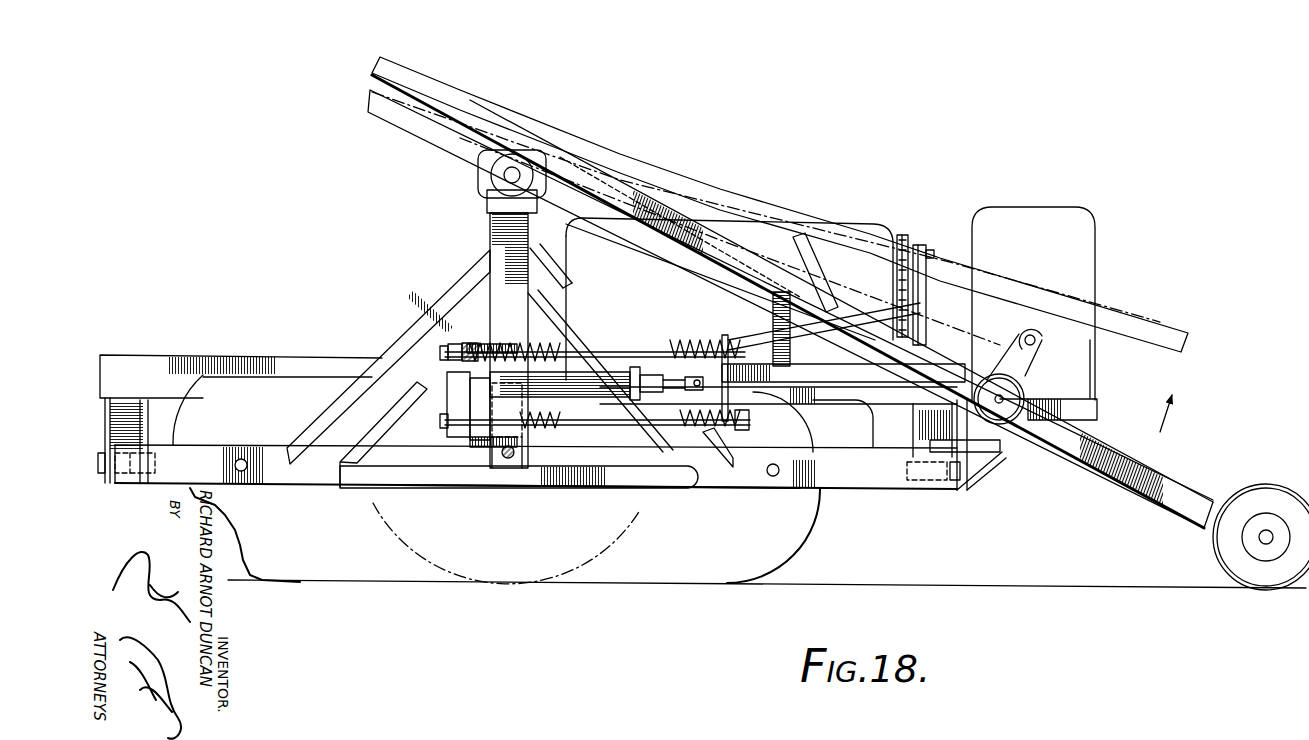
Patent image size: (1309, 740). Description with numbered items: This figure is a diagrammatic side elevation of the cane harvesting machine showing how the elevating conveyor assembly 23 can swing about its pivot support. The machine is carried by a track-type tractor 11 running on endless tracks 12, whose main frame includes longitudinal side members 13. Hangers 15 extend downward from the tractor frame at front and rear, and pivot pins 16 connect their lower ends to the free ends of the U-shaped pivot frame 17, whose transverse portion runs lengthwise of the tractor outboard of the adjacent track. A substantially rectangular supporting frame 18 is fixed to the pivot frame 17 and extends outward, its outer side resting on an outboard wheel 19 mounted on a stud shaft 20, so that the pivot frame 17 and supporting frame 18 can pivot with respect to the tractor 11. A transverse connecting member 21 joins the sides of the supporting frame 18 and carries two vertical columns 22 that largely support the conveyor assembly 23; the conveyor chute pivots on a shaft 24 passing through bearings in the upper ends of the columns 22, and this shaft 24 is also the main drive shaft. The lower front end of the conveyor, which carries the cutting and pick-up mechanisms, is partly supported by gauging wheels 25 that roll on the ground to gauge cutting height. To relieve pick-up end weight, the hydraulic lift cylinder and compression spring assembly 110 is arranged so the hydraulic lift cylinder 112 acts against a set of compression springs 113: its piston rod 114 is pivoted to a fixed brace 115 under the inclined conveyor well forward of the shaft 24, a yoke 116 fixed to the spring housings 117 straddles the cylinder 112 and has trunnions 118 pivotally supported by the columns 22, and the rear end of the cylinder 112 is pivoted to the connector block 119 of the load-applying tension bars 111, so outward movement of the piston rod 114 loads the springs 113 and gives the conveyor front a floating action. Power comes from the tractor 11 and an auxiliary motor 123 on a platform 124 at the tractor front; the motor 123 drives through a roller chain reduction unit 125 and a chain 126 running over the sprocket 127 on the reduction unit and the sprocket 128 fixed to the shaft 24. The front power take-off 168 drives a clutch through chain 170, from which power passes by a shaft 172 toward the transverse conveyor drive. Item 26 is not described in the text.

The tractor 11 is at (876, 220).
The endless tracks 12 is at (810, 528).
The longitudinal side members 13 is at (328, 363).
The hangers 15 is at (130, 417).
The pivot pins 16 is at (124, 473).
The pivot frame 17 is at (197, 448).
The supporting frame 18 is at (462, 477).
The outboard wheel 19 is at (607, 560).
The stud shaft 20 is at (509, 460).
The transverse connecting member 21 is at (750, 486).
The columns 22 is at (500, 232).
The elevating conveyor assembly 23 is at (700, 219).
The shaft 24 is at (508, 176).
The gauging wheels 25 is at (1263, 490).
The lever 26 is at (425, 88).
The hydraulic lift cylinder and compression spring assembly 110 is at (545, 375).
The load-applying tension bars 111 is at (643, 350).
The hydraulic lift cylinder 112 is at (575, 383).
The compression springs 113 is at (687, 343).
The piston rod 114 is at (673, 387).
The fixed brace 115 is at (843, 378).
The yoke 116 is at (505, 425).
The spring housings 117 is at (477, 346).
The trunnions 118 is at (505, 392).
The connector block 119 is at (450, 353).
The auxiliary motor 123 is at (1078, 213).
The platform 124 is at (1087, 410).
The roller chain reduction unit 125 is at (1037, 367).
The chain 126 is at (958, 348).
The sprocket 127 is at (1003, 423).
The sprocket 128 is at (500, 166).
The front power take-off 168 is at (908, 320).
The chain 170 is at (898, 275).
The shaft 172 is at (931, 250).